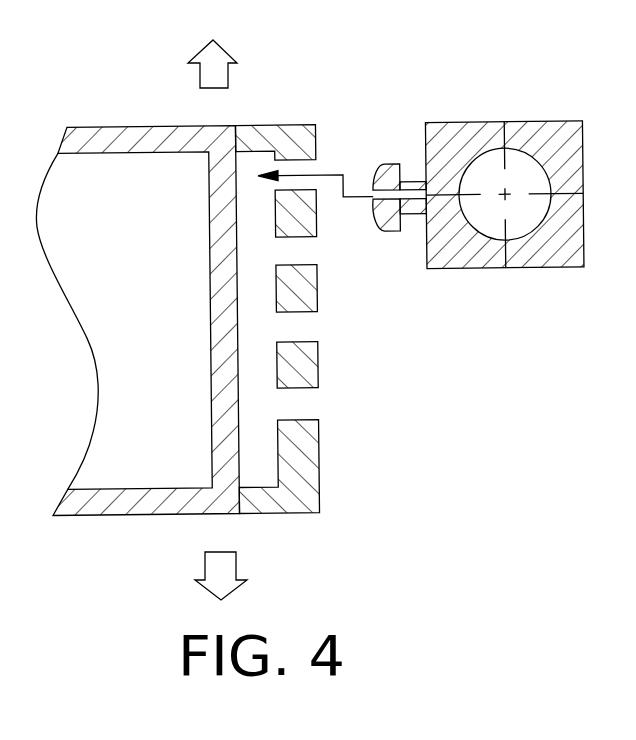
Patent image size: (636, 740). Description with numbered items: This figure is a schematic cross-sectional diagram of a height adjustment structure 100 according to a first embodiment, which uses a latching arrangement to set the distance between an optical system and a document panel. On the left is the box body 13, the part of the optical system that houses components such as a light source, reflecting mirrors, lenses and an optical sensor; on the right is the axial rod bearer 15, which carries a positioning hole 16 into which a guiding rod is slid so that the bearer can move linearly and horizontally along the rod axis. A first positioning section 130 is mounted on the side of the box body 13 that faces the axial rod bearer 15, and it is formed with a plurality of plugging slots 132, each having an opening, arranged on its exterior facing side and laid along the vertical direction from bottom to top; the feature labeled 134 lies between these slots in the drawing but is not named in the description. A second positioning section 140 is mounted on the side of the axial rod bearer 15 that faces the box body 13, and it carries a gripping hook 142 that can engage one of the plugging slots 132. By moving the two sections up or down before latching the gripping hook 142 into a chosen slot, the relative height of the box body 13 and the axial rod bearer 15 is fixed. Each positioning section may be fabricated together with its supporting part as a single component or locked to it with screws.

The box body 13 is at (125, 130).
The axial rod bearer 15 is at (504, 156).
The positioning hole 16 is at (521, 184).
The height adjustment structure 100 is at (420, 278).
The first positioning section 130 is at (389, 319).
The plugging slots 132 is at (316, 413).
The slot 134 is at (320, 408).
The second positioning section 140 is at (457, 223).
The gripping hook 142 is at (383, 169).